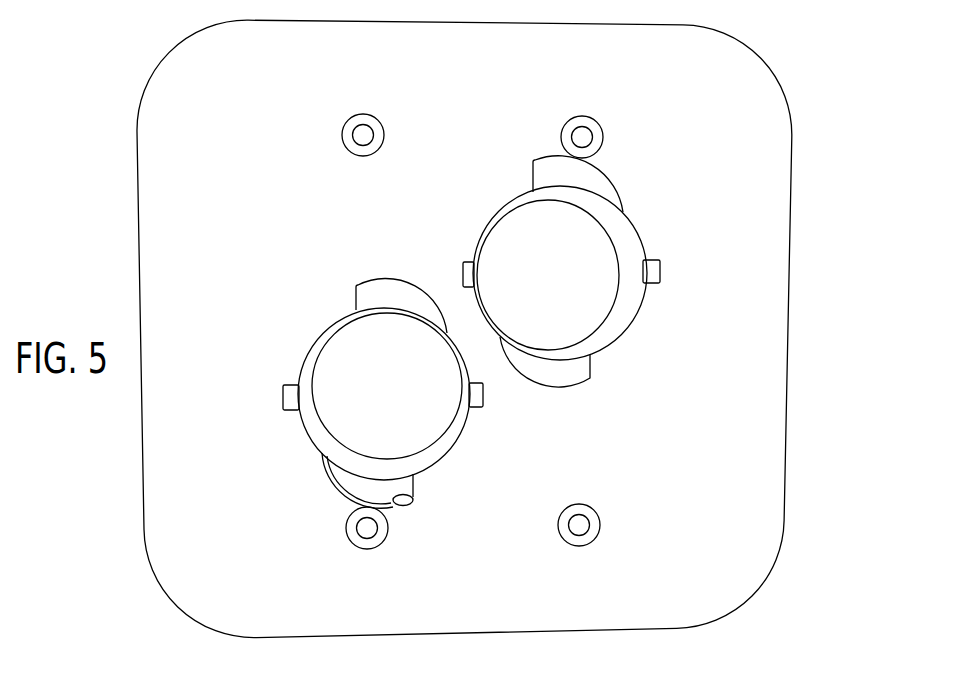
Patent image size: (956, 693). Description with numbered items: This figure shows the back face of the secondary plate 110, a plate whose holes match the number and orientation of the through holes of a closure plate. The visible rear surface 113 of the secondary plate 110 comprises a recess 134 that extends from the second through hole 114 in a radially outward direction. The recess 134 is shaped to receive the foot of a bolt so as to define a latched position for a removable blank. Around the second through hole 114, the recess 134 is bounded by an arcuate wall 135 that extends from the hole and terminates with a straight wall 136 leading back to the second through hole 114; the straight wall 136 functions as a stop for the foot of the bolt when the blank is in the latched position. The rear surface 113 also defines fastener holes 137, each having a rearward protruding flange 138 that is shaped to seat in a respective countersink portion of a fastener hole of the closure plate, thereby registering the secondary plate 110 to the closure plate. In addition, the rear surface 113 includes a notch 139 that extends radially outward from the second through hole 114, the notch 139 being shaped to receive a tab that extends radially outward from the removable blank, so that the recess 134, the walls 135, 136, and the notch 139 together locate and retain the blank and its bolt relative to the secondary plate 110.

The secondary plate 110 is at (773, 193).
The rear surface 113 is at (245, 162).
The second through hole 114 is at (599, 271).
The recess 134 is at (386, 393).
The arcuate wall 135 is at (353, 498).
The straight wall 136 is at (392, 507).
The fastener hole 137 is at (582, 142).
The rearward protruding flange 138 is at (579, 530).
The notch 139 is at (651, 284).